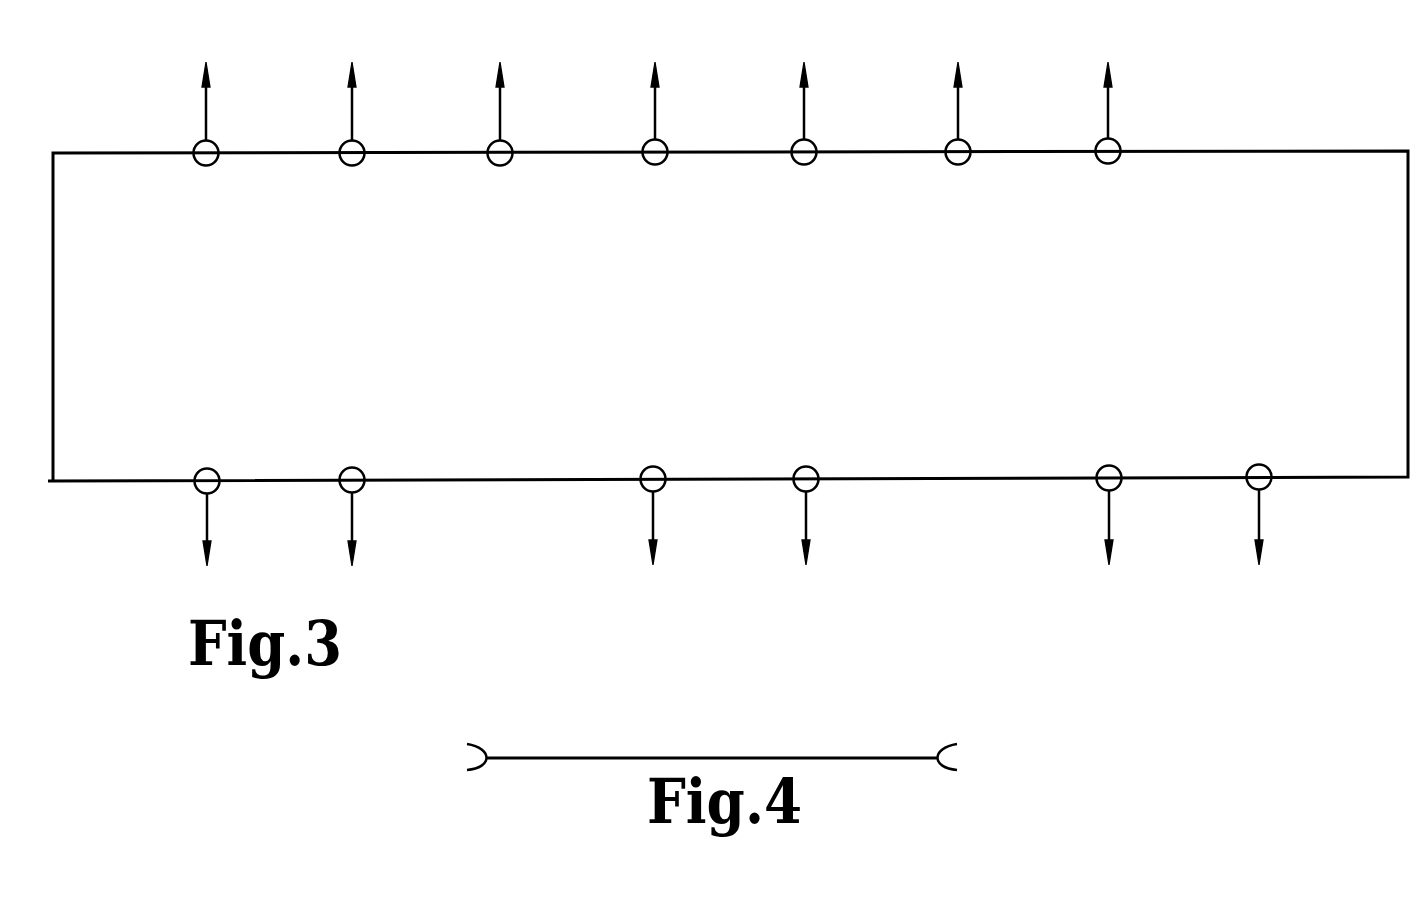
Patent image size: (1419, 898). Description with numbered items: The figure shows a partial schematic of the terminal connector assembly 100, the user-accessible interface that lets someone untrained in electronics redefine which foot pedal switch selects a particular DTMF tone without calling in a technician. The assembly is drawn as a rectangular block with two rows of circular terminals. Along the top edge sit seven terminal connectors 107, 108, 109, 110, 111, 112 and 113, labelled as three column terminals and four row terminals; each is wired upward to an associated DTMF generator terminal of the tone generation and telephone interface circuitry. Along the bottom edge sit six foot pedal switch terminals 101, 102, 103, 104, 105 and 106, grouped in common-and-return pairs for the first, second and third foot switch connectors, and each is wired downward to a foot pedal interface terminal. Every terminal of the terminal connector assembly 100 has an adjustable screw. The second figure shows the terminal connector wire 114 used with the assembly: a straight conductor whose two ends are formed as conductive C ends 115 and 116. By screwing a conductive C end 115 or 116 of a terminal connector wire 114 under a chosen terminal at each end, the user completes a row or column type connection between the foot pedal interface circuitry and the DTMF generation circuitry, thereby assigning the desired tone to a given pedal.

In FIG. 3, the terminal connector assembly 100 is at (1273, 149).
In FIG. 3, the foot pedal switch terminal 101 is at (216, 490).
In FIG. 3, the foot pedal switch terminal 102 is at (361, 489).
In FIG. 3, the foot pedal switch terminal 103 is at (662, 488).
In FIG. 3, the foot pedal switch terminal 104 is at (815, 488).
In FIG. 3, the foot pedal switch terminal 105 is at (1118, 487).
In FIG. 3, the foot pedal switch terminal 106 is at (1268, 486).
In FIG. 3, the terminal connector 107 is at (215, 145).
In FIG. 3, the terminal connector 108 is at (361, 145).
In FIG. 3, the terminal connector 109 is at (509, 145).
In FIG. 3, the terminal connector 110 is at (664, 144).
In FIG. 3, the terminal connector 111 is at (813, 144).
In FIG. 3, the terminal connector 112 is at (967, 144).
In FIG. 3, the terminal connector 113 is at (1117, 143).
In FIG. 4, the terminal connector wire 114 is at (722, 757).
In FIG. 4, the conductive C end 115 is at (947, 745).
In FIG. 4, the conductive C end 116 is at (481, 745).